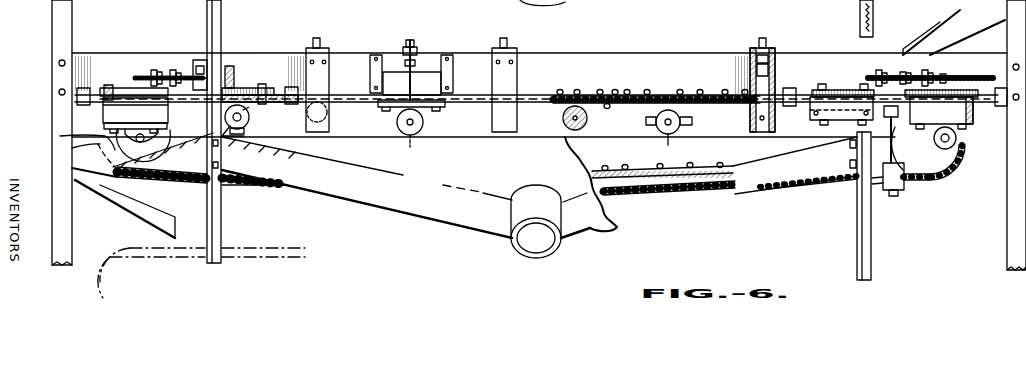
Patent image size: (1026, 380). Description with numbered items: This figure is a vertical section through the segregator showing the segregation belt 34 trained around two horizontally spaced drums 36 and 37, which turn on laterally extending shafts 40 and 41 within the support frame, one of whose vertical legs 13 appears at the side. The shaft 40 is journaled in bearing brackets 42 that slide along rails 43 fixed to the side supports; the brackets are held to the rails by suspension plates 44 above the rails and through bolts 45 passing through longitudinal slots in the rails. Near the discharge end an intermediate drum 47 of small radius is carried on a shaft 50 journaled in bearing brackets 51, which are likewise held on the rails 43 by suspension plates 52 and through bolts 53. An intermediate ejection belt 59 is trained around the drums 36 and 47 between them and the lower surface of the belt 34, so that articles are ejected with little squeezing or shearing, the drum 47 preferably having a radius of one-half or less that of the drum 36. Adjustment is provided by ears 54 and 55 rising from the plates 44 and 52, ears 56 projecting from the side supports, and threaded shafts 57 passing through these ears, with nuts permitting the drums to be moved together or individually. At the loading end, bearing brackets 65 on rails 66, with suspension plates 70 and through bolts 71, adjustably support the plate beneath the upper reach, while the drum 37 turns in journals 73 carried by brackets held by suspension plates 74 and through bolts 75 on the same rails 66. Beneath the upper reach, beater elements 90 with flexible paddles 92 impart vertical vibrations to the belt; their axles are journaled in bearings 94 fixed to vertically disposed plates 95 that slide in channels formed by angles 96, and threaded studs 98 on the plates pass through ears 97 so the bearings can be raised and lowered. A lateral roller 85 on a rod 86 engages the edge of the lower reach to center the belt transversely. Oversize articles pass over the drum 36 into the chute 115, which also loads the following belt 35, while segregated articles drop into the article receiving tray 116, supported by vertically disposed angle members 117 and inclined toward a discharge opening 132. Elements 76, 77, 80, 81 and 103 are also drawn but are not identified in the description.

The leg 13 is at (60, 14).
The segregation belt 34 is at (235, 186).
The belt 35 is at (158, 258).
The drum 36 is at (108, 138).
The drum 37 is at (965, 172).
The shaft 40 is at (144, 138).
The shaft 41 is at (950, 138).
The bearing bracket 42 is at (105, 106).
The rail 43 is at (90, 88).
The suspension plate 44 is at (122, 88).
The through bolt 45 is at (113, 88).
The intermediate drum 47 is at (243, 121).
The shaft 50 is at (236, 140).
The bearing bracket 51 is at (264, 107).
The suspension plate 52 is at (233, 90).
The through bolt 53 is at (222, 68).
The ear 54 is at (177, 72).
The ear 55 is at (199, 62).
The ear 56 is at (161, 72).
The threaded shaft 57 is at (144, 76).
The intermediate ejection belt 59 is at (178, 150).
The bearing bracket 65 is at (814, 114).
The rail 66 is at (798, 92).
The suspension plate 70 is at (836, 91).
The through bolt 71 is at (821, 88).
The journal 73 is at (975, 162).
The suspension plate 74 is at (953, 92).
The through bolt 75 is at (970, 92).
The nut 76 is at (879, 78).
The adjusting screw 77 is at (906, 78).
The nut 80 is at (930, 76).
The lock nut 81 is at (947, 80).
The lateral roller 85 is at (905, 186).
The rod 86 is at (891, 124).
The beater element 90 is at (668, 136).
The flexible paddle 92 is at (410, 147).
The bearing 94 is at (424, 124).
The vertically disposed plate 95 is at (422, 76).
The angle 96 is at (378, 57).
The ear 97 is at (407, 47).
The threaded stud 98 is at (412, 40).
The cylinder 103 is at (311, 52).
The chute 115 is at (96, 195).
The article receiving tray 116 is at (768, 192).
The angle member 117 is at (222, 238).
The discharge opening 132 is at (541, 258).